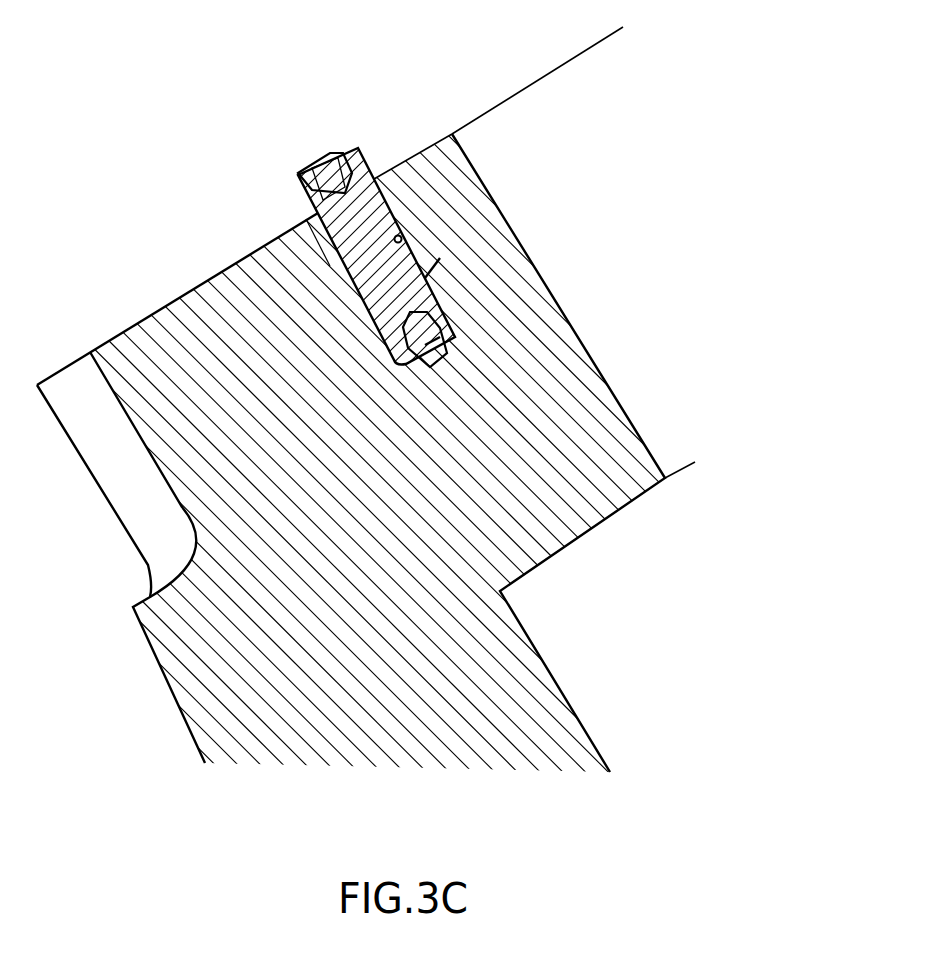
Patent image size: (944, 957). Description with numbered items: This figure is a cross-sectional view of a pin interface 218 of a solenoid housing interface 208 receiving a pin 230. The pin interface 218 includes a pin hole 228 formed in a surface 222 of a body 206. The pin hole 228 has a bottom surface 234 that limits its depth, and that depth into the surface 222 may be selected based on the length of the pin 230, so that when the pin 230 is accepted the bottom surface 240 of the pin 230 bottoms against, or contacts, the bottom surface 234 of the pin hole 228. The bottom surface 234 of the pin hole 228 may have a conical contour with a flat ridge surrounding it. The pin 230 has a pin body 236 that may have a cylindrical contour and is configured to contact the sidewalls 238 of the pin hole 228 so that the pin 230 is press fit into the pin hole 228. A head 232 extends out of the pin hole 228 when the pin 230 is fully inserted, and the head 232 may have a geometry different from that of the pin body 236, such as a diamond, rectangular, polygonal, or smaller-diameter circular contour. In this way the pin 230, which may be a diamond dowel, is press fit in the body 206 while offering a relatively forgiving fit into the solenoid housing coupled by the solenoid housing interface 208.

The body 206 is at (150, 139).
The solenoid housing interface 208 is at (200, 283).
The pin interface 218 is at (330, 252).
The surface 222 is at (446, 132).
The pin hole 228 is at (386, 218).
The pin 230 is at (353, 205).
The head 232 is at (304, 180).
The bottom surface 234 is at (440, 337).
The pin body 236 is at (440, 240).
The sidewalls 238 is at (399, 235).
The bottom surface 240 is at (416, 366).